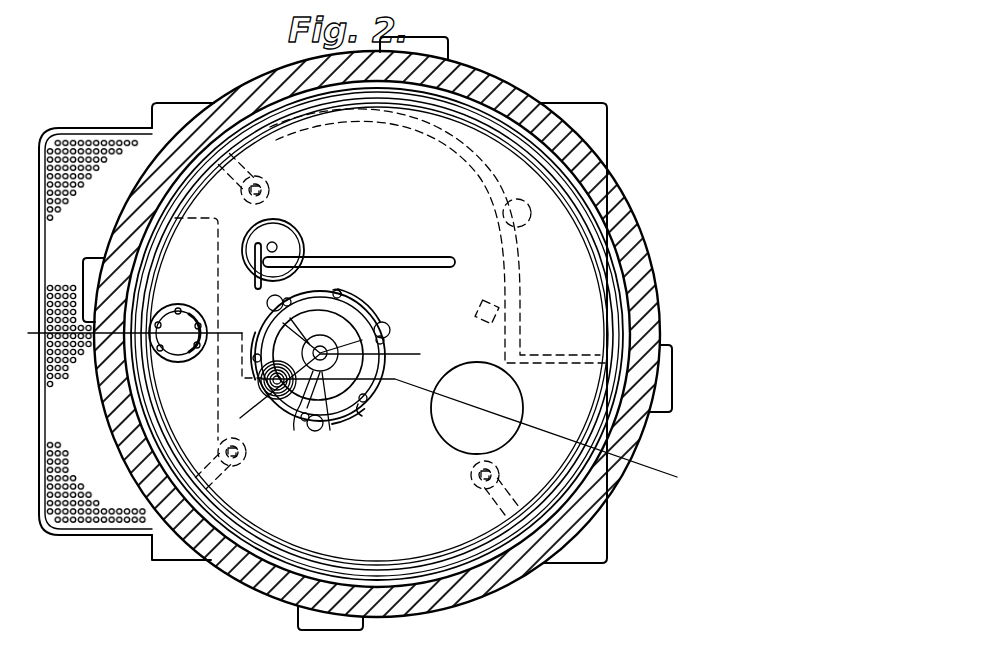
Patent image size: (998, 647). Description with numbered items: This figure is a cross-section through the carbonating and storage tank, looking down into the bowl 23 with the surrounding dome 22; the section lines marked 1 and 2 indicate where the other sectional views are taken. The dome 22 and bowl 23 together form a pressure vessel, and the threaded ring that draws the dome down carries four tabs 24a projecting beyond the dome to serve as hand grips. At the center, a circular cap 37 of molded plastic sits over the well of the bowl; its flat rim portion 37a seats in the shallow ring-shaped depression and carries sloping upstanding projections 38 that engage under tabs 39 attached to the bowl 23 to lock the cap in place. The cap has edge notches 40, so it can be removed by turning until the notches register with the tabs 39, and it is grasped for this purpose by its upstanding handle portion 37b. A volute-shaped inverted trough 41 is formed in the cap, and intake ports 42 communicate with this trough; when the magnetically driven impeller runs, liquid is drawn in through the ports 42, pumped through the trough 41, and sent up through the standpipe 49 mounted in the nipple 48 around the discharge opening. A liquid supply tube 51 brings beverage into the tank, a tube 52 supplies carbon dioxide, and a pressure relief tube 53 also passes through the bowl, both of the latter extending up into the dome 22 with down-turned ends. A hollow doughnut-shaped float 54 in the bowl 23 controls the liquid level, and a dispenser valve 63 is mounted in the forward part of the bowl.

The section line 1- 1 is at (30, 333).
The section line 2- 2 is at (236, 421).
The dome 22 is at (455, 585).
The bowl 23 is at (288, 523).
The tabs 24a is at (440, 48).
The circular cap 37 is at (388, 348).
The flat rim portion 37a is at (370, 398).
The upstanding handle portion 37b is at (338, 296).
The sloping upstanding projections 38 is at (265, 302).
The tabs 39 is at (283, 298).
The edge notches 40 is at (352, 300).
The volute-shaped inverted trough 41 is at (326, 424).
The intake ports 42 is at (298, 412).
The nipple 48 is at (272, 393).
The standpipe 49 is at (258, 383).
The liquid supply tube 51 is at (278, 244).
The tube 52 is at (257, 265).
The pressure relief tube 53 is at (412, 258).
The float 54 is at (487, 430).
The dispenser valve 63 is at (178, 350).